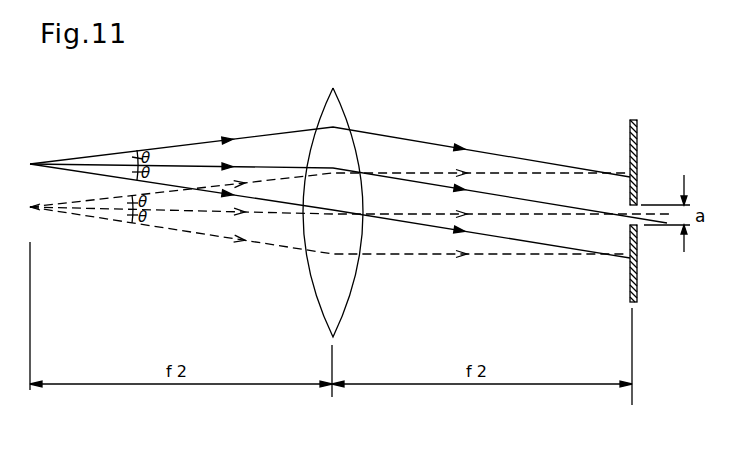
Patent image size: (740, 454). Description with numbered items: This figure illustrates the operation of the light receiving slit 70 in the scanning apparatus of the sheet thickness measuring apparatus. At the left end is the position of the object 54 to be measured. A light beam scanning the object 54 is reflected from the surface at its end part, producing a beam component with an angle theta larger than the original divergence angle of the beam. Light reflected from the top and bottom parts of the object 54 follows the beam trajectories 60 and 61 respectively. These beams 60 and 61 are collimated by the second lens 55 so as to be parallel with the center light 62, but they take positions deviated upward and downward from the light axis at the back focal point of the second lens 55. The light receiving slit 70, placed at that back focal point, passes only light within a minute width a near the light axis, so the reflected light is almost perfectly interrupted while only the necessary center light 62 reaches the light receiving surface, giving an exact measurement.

The object to be measured 54 is at (29, 337).
The second lens 55 is at (342, 110).
The beam trajectory 60 is at (422, 143).
The beam trajectory 61 is at (418, 228).
The center light 62 is at (511, 196).
The light receiving slit 70 is at (633, 280).